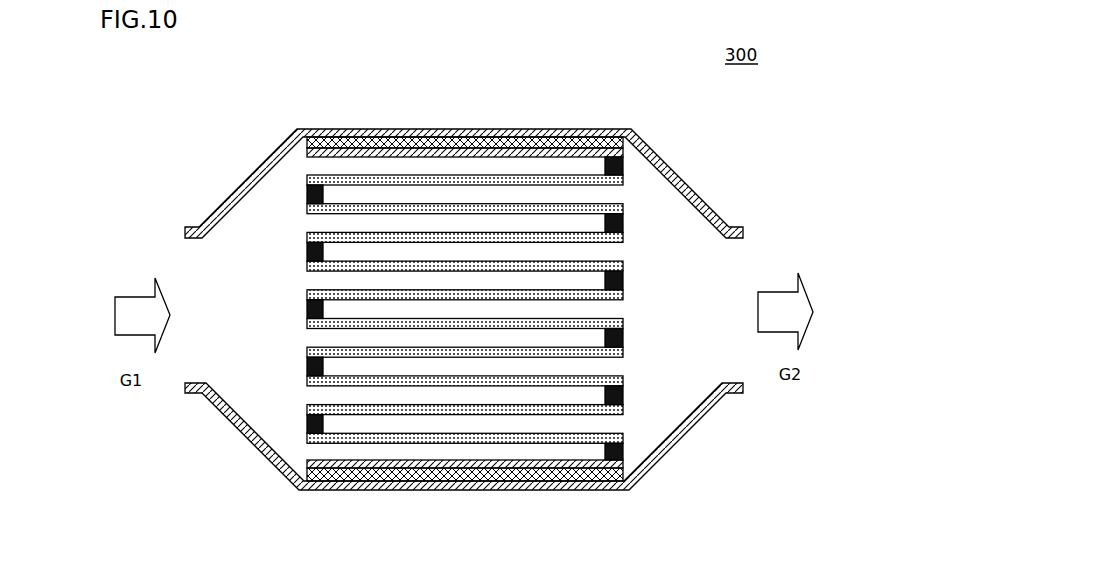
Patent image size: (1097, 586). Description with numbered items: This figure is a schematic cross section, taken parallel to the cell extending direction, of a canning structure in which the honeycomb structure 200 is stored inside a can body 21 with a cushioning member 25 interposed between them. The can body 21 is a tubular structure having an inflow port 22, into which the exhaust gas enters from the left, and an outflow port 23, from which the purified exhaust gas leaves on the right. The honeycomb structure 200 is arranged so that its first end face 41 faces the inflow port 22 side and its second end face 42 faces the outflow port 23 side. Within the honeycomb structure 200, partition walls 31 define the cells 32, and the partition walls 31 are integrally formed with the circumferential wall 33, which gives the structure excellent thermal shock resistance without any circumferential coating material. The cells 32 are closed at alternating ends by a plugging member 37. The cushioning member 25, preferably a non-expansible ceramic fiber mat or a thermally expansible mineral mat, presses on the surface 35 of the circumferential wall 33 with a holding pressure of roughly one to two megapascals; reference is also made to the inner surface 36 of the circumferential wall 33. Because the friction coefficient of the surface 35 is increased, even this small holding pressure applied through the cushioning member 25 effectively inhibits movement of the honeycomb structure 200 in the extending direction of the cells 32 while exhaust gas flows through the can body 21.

The honeycomb structure 200 is at (467, 308).
The can body 21 is at (400, 130).
The inflow port 22 is at (190, 238).
The outflow port 23 is at (743, 238).
The cushioning member 25 is at (482, 140).
The partition walls 31 is at (440, 435).
The cells 32 is at (479, 422).
The circumferential wall 33 is at (513, 150).
The surface of the circumferential wall 35 is at (338, 133).
The inner surface of the circumferential wall 36 is at (333, 169).
The plugging member 37 is at (307, 250).
The first end face 41 is at (291, 201).
The second end face 42 is at (640, 333).